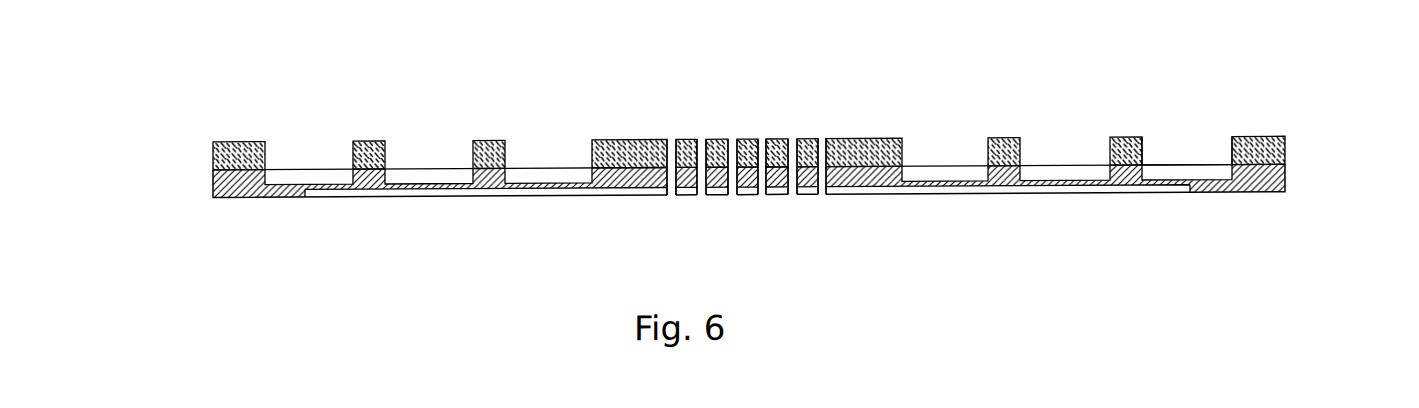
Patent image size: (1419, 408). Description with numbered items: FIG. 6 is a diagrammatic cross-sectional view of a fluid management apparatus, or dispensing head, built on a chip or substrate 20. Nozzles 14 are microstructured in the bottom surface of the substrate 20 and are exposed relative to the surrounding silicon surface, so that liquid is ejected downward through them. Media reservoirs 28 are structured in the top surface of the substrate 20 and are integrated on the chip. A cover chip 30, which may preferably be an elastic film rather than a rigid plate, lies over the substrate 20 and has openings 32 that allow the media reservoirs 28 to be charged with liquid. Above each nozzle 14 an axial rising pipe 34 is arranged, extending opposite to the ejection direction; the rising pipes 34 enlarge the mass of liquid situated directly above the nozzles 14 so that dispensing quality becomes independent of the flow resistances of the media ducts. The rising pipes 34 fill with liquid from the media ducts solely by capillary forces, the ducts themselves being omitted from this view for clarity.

The nozzles 14 is at (672, 200).
The substrate 20 is at (1285, 185).
The media reservoirs 28 is at (1170, 174).
The cover chip 30 is at (1285, 154).
The openings 32 is at (1202, 151).
The axial rising pipe 34 is at (793, 142).